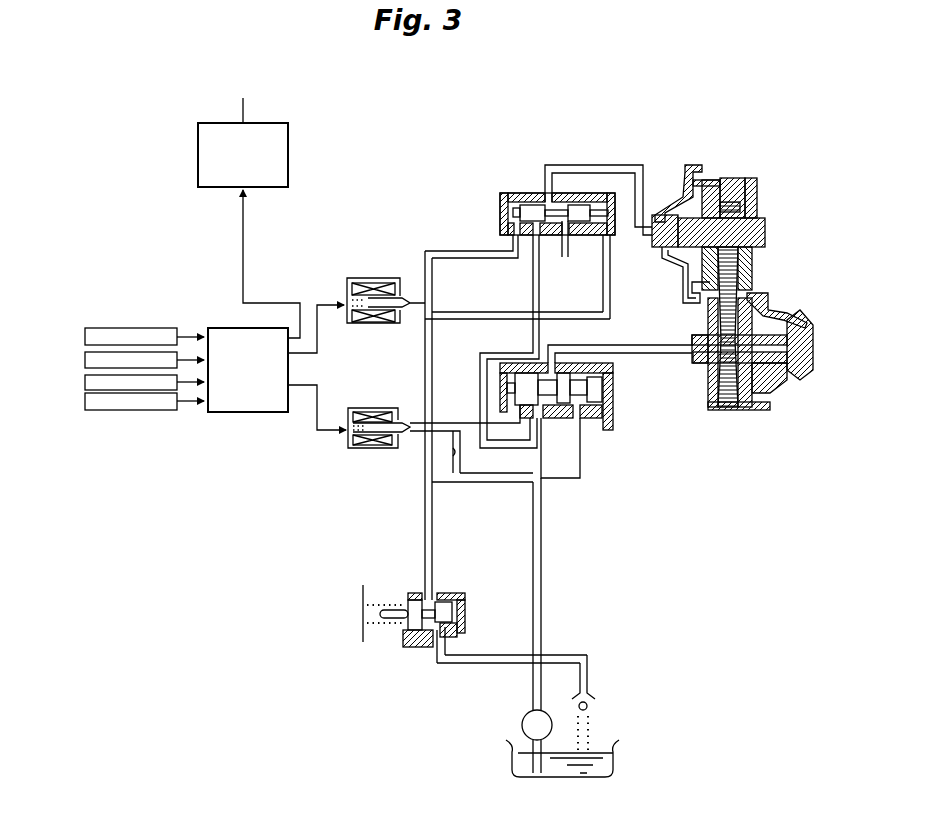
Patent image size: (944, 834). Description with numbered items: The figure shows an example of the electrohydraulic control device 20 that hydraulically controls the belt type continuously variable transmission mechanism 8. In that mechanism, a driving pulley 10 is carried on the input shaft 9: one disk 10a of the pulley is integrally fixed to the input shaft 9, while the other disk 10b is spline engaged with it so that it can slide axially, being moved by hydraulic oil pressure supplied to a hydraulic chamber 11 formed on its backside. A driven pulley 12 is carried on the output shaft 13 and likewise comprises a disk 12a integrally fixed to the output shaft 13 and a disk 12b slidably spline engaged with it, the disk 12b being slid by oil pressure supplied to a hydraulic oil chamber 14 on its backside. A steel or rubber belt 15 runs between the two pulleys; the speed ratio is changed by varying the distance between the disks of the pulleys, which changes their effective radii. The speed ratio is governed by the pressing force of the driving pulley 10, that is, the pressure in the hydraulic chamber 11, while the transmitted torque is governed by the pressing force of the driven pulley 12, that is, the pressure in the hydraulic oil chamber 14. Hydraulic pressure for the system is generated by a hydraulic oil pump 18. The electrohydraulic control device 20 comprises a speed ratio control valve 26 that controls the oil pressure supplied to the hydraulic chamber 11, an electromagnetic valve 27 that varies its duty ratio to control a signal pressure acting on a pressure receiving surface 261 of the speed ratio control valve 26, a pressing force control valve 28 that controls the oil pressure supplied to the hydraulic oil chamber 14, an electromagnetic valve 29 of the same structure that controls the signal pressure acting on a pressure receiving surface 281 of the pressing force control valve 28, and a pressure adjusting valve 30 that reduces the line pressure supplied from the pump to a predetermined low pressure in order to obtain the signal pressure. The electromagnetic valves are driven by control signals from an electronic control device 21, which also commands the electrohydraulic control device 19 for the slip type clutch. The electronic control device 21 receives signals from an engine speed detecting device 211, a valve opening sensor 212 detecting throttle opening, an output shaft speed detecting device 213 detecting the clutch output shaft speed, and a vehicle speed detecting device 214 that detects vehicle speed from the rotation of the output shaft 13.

The belt type continuously variable transmission mechanism 8 is at (747, 300).
The input shaft 9 is at (768, 228).
The driving pulley 10 is at (761, 177).
The disk 10a is at (757, 200).
The disk 10b is at (712, 178).
The hydraulic chamber 11 is at (690, 200).
The driven pulley 12 is at (747, 381).
The disk 12a is at (712, 378).
The disk 12b is at (790, 385).
The output shaft 13 is at (811, 323).
The hydraulic oil chamber 14 is at (778, 312).
The belt 15 is at (757, 272).
The hydraulic oil pump 18 is at (522, 728).
The electrohydraulic control device 19 is at (290, 140).
The electrohydraulic control device 20 is at (341, 539).
The electronic control device 21 is at (252, 416).
The engine speed detecting device 211 is at (88, 328).
The valve opening sensor 212 is at (86, 356).
The output shaft speed detecting device 213 is at (87, 376).
The vehicle speed detecting device 214 is at (87, 404).
The speed ratio control valve 26 is at (520, 233).
The pressure receiving surface 261 is at (510, 212).
The electromagnetic valve 27 is at (372, 325).
The pressing force control valve 28 is at (543, 411).
The pressure receiving surface 281 is at (515, 387).
The electromagnetic valve 29 is at (372, 452).
The pressure adjusting valve 30 is at (450, 596).